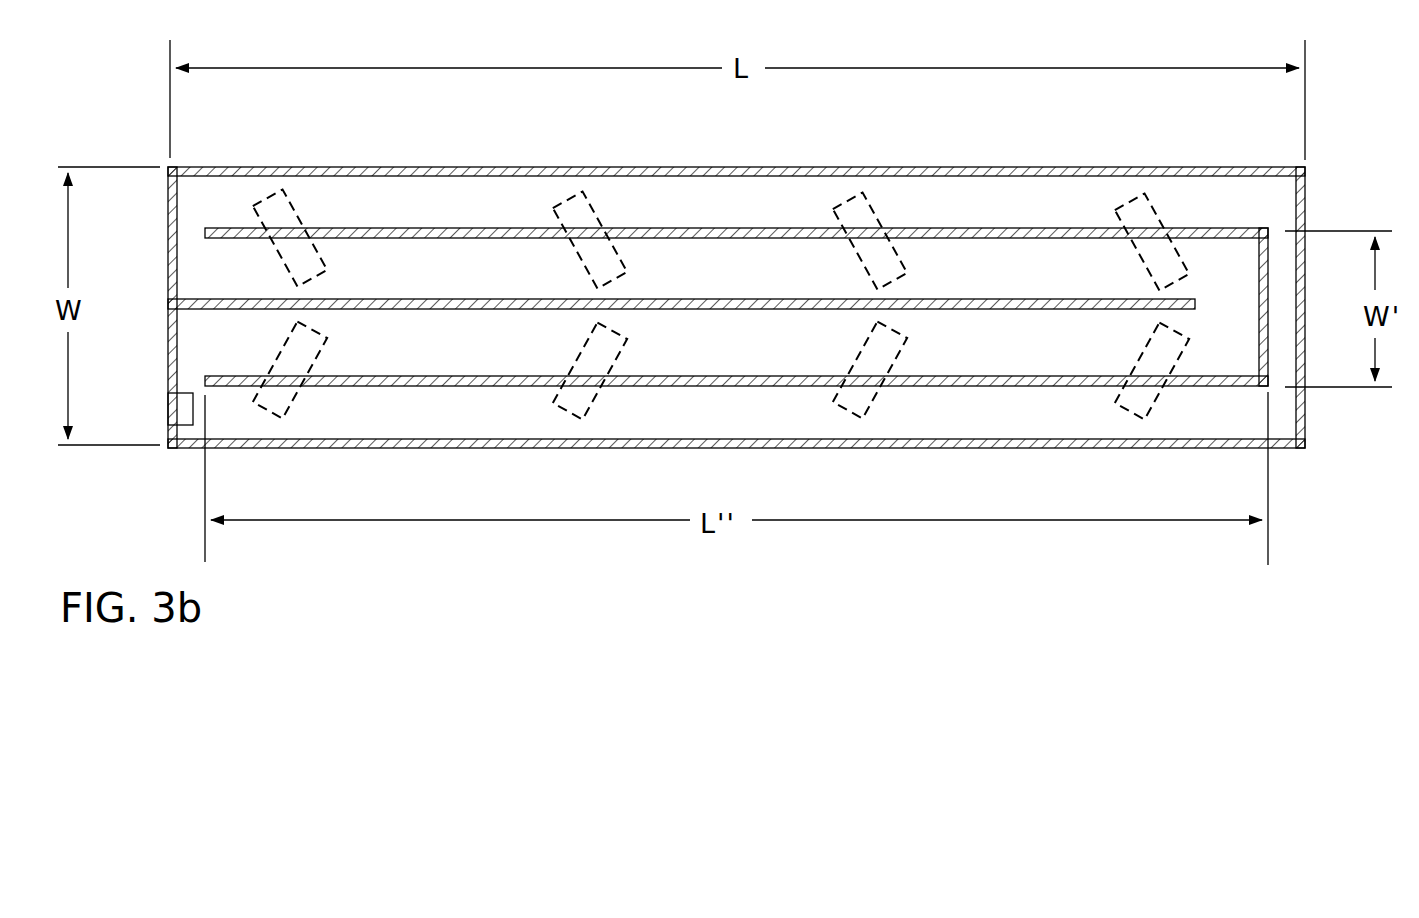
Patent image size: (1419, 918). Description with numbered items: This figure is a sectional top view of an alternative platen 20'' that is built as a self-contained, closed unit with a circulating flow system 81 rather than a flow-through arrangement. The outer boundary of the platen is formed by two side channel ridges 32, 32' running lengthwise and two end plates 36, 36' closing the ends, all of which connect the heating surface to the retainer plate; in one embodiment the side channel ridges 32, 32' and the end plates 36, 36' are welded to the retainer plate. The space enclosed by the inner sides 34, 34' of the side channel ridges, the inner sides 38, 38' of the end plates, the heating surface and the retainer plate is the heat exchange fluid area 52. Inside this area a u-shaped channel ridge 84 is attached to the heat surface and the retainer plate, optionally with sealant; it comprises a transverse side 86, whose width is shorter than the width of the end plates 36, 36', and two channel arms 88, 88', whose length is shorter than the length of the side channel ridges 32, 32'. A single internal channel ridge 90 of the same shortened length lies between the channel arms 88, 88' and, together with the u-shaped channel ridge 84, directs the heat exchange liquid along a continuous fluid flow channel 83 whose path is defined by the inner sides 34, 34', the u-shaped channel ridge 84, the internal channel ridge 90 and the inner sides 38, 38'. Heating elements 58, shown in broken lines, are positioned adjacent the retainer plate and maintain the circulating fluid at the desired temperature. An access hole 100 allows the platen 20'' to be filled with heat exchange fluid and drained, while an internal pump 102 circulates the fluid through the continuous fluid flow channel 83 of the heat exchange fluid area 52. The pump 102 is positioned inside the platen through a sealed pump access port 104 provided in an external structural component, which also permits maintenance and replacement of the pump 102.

The platen 20'' is at (729, 302).
The side channel ridge 32 is at (736, 140).
The side channel ridge 32' is at (736, 472).
The inner side of side channel ridge 34 is at (736, 145).
The inner side of side channel ridge 34' is at (736, 458).
The end plate 36 is at (676, 377).
The end plate 36' is at (1281, 281).
The inner side of end plate 38 is at (137, 307).
The inner side of end plate 38' is at (1247, 281).
The heat exchange fluid area 52 is at (192, 270).
The heating elements 58 is at (262, 200).
The circulating flow system 81 is at (350, 405).
The continuous fluid flow channel 83 is at (203, 350).
The u-shaped channel ridge 84 is at (1269, 299).
The transverse side 86 is at (1269, 248).
The channel arm 88 is at (736, 171).
The channel arm 88' is at (676, 434).
The internal channel ridge 90 is at (205, 302).
The access hole 100 is at (1228, 448).
The internal pump 102 is at (207, 446).
The sealed pump access port 104 is at (168, 408).